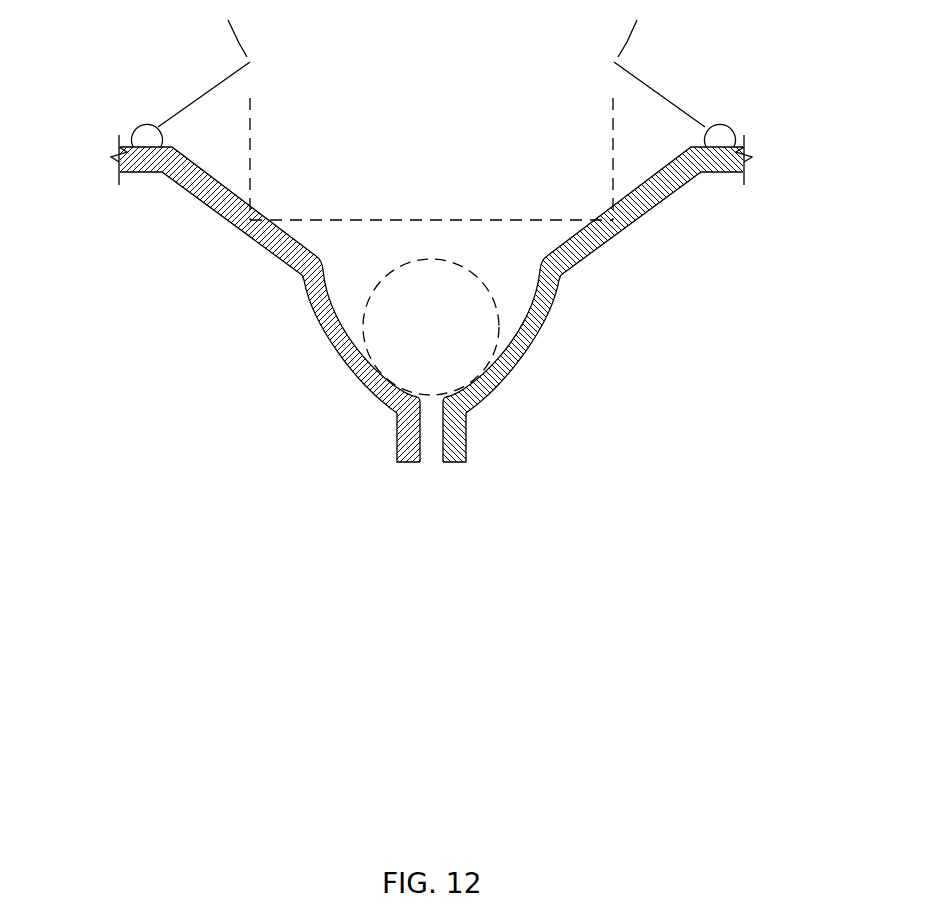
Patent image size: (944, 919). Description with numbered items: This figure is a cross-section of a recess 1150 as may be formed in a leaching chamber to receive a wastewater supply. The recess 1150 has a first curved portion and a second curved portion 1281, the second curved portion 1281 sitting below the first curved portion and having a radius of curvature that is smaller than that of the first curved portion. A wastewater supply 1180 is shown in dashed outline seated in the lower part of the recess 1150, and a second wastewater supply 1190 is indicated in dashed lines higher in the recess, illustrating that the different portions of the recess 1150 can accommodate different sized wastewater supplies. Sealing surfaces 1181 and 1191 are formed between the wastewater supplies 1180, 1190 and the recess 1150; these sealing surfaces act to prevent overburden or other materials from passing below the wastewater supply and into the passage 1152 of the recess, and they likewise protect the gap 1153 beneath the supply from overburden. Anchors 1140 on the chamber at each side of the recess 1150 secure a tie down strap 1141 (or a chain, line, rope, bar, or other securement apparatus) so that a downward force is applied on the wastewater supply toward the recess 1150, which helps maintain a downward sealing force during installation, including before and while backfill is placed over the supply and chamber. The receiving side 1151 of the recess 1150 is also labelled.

The anchor 1140 is at (142, 130).
The tie down strap 1141 is at (650, 70).
The recess 1150 is at (472, 305).
The receiving side 1151 is at (206, 166).
The passage 1152 is at (437, 465).
The gap 1153 is at (428, 400).
The wastewater supply 1180 is at (485, 283).
The sealing surface 1181 is at (372, 367).
The wastewater supply 1190 is at (251, 135).
The sealing surface 1191 is at (251, 220).
The second curved portion 1281 is at (515, 372).